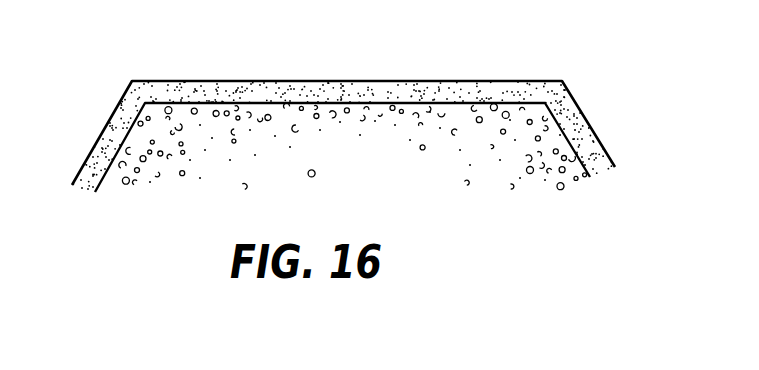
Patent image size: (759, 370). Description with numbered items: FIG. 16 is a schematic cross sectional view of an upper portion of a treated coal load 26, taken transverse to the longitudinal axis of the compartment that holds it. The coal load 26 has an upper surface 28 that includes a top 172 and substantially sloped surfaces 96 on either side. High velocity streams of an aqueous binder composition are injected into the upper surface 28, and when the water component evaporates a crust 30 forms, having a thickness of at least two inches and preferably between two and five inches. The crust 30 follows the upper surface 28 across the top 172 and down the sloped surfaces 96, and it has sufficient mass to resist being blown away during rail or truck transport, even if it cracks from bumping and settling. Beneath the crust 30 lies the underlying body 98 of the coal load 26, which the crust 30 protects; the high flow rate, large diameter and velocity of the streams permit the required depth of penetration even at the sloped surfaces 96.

The load of coal 26 is at (628, 108).
The upper surface 28 is at (213, 80).
The crust 30 is at (313, 92).
The top 172 is at (417, 80).
The sloped surface 96 is at (602, 138).
The underlying body 98 is at (340, 133).